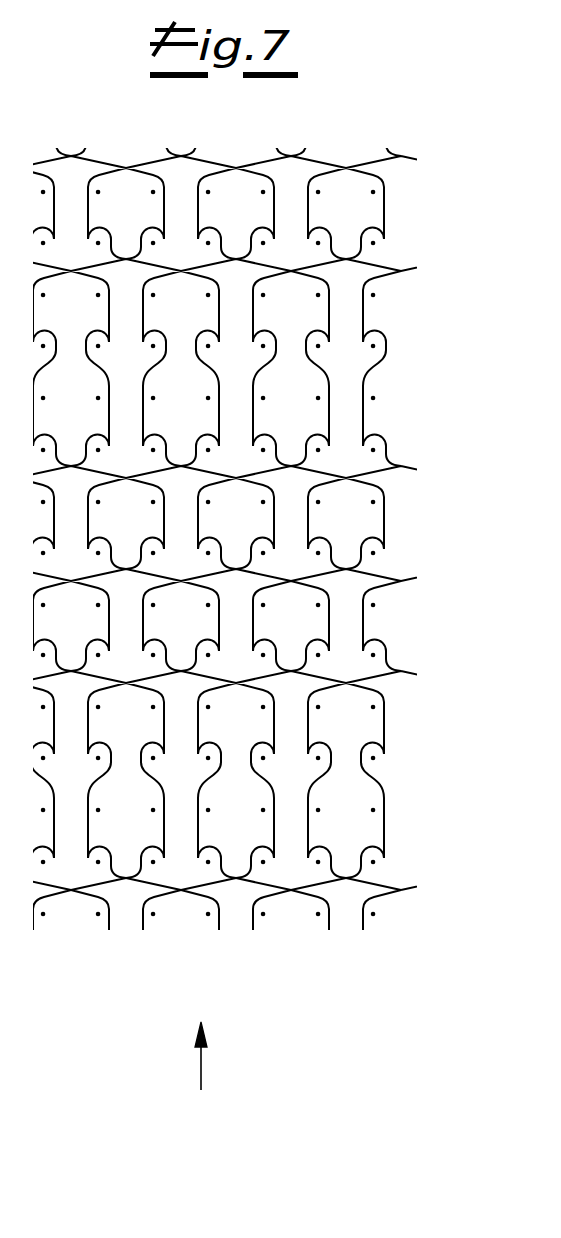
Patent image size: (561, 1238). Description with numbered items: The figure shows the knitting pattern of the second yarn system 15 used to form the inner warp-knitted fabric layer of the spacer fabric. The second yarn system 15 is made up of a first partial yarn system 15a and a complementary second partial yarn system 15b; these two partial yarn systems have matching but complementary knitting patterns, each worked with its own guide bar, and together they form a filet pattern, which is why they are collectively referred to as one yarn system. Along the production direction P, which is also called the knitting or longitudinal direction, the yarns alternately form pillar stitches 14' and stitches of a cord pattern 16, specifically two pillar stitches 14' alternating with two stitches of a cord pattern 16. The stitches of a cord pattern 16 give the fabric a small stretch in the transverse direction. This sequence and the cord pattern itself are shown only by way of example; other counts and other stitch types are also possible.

The second yarn system 15 is at (418, 140).
The stitches of a cord pattern 16 is at (392, 688).
The pillar stitches 14' is at (252, 774).
The first partial yarn system 15a is at (310, 966).
The second partial yarn system 15b is at (352, 965).
The production direction P is at (201, 1074).